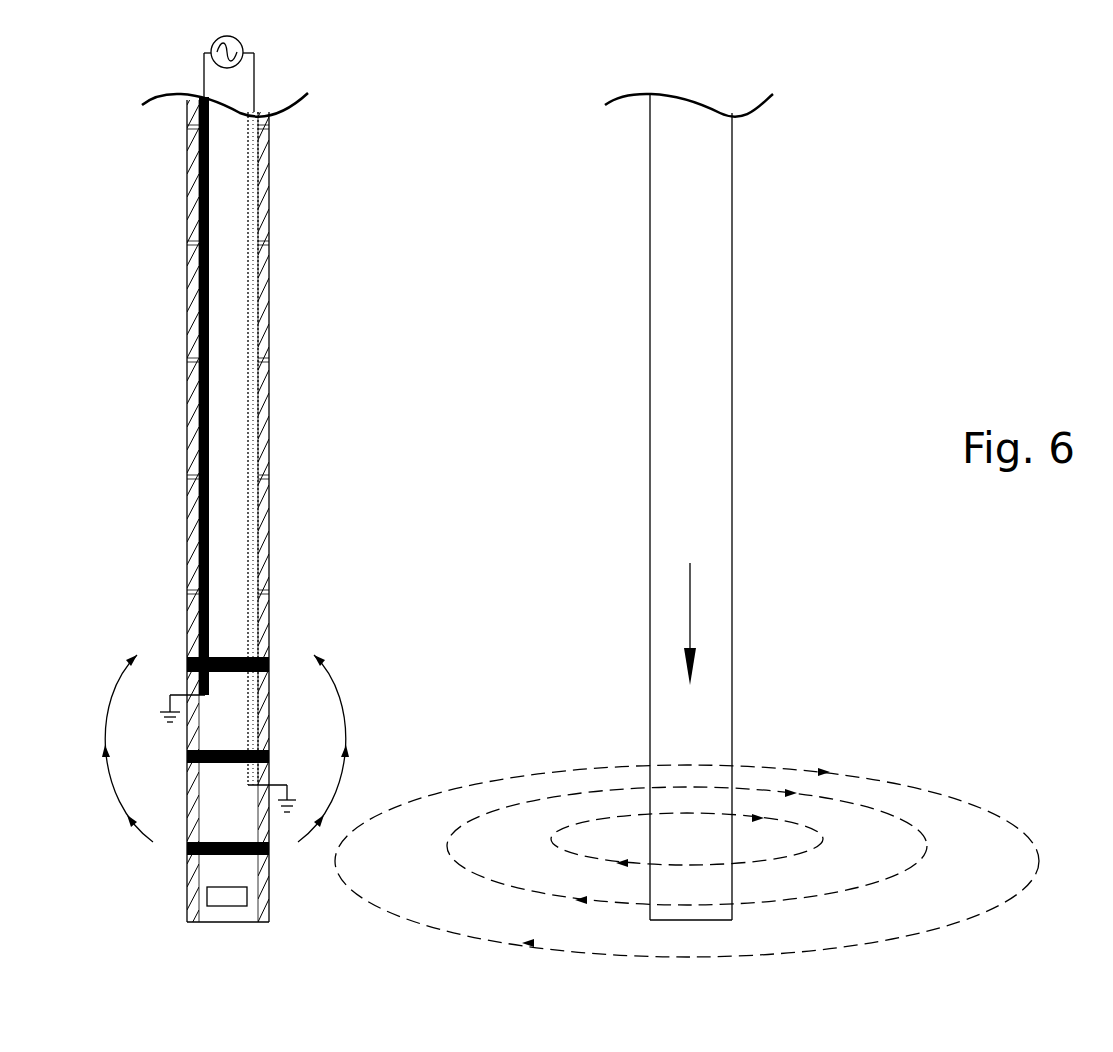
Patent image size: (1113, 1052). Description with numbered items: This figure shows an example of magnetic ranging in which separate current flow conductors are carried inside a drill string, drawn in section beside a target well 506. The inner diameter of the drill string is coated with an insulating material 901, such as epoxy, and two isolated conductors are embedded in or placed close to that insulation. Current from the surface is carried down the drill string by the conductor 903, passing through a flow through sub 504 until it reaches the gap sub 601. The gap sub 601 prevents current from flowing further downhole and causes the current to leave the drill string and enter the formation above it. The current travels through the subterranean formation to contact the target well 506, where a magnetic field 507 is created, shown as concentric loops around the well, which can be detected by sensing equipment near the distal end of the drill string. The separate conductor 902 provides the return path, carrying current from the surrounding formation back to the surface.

The insulating material 901 is at (263, 205).
The current carrying mechanism 902 is at (207, 494).
The conductor 903 is at (250, 404).
The flow through sub 504 is at (268, 658).
The gap sub 601 is at (270, 848).
The target well 506 is at (732, 228).
The magnetic field 507 is at (893, 783).